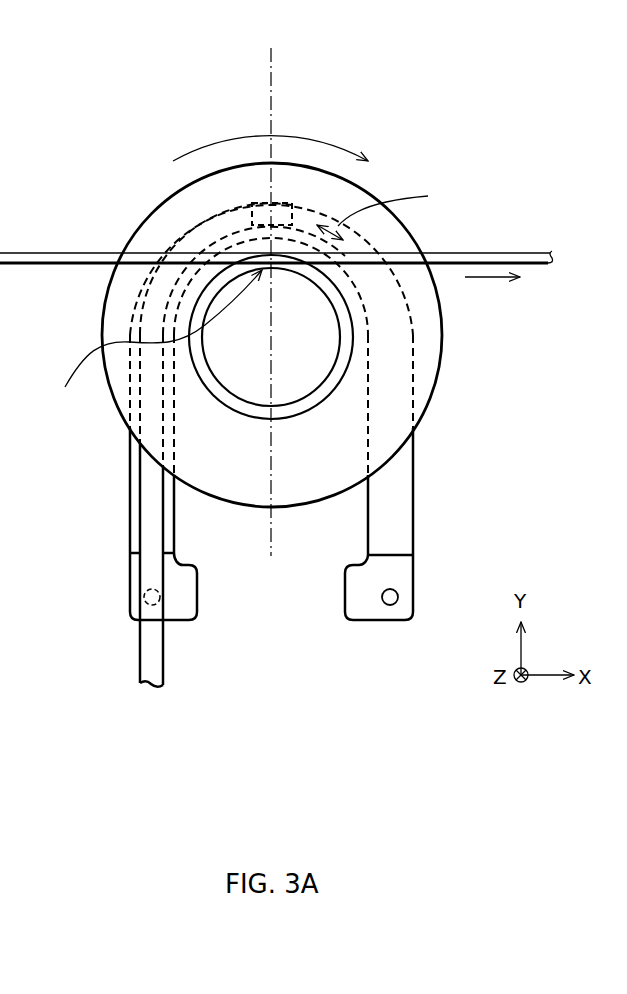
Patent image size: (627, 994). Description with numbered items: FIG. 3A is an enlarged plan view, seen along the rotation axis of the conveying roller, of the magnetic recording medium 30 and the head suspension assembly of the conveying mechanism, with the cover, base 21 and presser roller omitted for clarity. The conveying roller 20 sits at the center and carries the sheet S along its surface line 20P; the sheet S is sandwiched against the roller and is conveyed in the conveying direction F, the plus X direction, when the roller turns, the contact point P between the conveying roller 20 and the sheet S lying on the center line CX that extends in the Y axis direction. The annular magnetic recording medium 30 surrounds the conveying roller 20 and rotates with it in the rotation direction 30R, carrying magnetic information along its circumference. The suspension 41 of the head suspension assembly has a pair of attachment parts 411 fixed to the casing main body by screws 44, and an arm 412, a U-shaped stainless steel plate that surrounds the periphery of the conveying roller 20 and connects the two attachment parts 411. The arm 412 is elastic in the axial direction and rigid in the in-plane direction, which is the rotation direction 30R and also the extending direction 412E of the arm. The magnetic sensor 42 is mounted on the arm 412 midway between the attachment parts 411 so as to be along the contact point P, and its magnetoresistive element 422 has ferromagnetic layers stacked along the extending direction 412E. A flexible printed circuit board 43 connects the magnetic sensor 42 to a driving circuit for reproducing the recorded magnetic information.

The conveying roller 20 is at (303, 357).
The shaft surface line 20P is at (50, 251).
The base 21 is at (307, 403).
The magnetic recording medium 30 is at (433, 318).
The rotation direction of magnetic recording medium 30R is at (282, 137).
The suspension 41 is at (298, 401).
The attachment parts 411 is at (177, 597).
The arm 412 is at (413, 357).
The extending direction of arm 412E is at (398, 211).
The magnetic sensor 42 is at (262, 203).
The magnetoresistive element 422 is at (296, 214).
The flexible printed circuit board 43 is at (152, 652).
The screws 44 is at (144, 598).
The sheet S is at (533, 258).
The contact point P is at (159, 345).
The conveying direction F is at (484, 279).
The center line CX is at (280, 63).